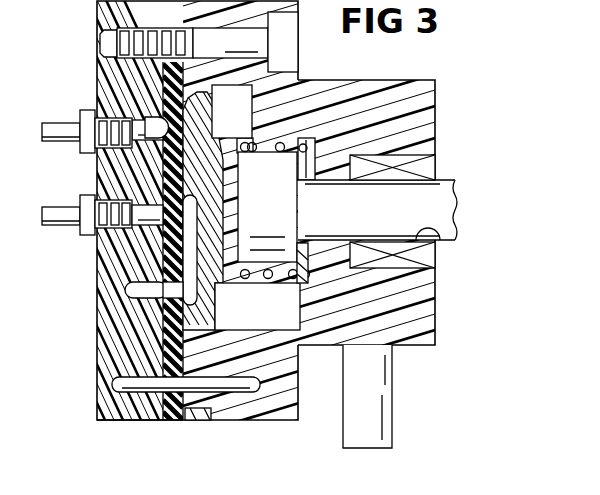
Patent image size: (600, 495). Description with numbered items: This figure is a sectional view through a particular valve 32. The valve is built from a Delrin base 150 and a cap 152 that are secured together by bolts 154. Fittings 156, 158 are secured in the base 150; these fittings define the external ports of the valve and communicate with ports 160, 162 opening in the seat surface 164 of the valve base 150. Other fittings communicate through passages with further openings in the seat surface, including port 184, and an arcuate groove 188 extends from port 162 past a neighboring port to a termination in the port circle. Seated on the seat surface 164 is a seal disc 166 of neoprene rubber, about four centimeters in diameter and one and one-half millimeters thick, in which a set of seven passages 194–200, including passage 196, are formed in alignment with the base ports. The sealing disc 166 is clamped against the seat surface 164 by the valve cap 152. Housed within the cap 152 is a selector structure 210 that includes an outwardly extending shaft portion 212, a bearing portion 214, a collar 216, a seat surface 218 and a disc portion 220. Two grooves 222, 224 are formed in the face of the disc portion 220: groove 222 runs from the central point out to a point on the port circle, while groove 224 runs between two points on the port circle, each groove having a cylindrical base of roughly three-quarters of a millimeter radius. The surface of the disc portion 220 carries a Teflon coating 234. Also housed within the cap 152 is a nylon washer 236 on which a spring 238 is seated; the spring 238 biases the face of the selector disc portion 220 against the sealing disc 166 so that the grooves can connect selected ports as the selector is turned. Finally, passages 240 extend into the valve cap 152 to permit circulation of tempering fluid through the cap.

The valve 32 is at (386, 72).
The Delrin base 150 is at (94, 402).
The cap 152 is at (254, 426).
The bolts 154 is at (118, 44).
The fitting 156 is at (55, 225).
The fitting 158 is at (58, 122).
The port 160 is at (143, 226).
The port 162 is at (140, 120).
The seat surface 164 is at (117, 379).
The seal disc 166 is at (166, 421).
The port 184 is at (130, 294).
The arcuate groove 188 is at (182, 200).
The passage 194 is at (168, 226).
The passage 196 is at (152, 118).
The passage 200 is at (168, 294).
The selector structure 210 is at (262, 175).
The shaft portion 212 is at (446, 174).
The bearing portion 214 is at (440, 244).
The collar 216 is at (314, 137).
The seat surface 218 is at (253, 98).
The disc portion 220 is at (150, 172).
The groove 222 is at (198, 247).
The groove 224 is at (196, 126).
The Teflon coating 234 is at (165, 340).
The nylon washer 236 is at (304, 281).
The spring 238 is at (269, 279).
The passages 240 is at (386, 420).